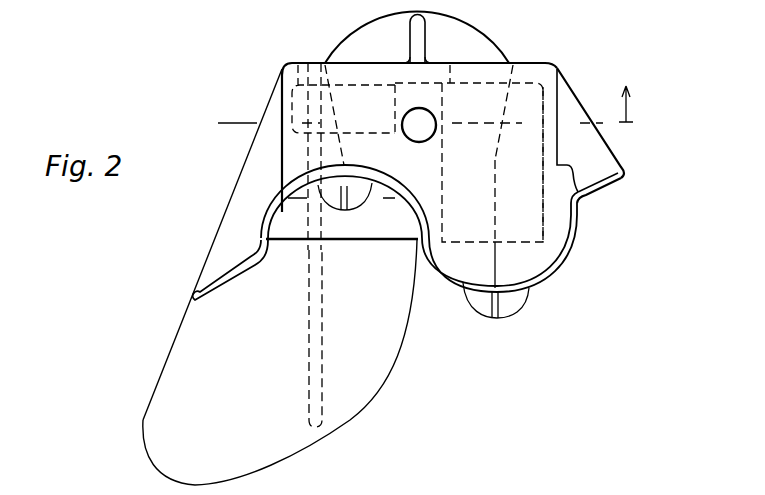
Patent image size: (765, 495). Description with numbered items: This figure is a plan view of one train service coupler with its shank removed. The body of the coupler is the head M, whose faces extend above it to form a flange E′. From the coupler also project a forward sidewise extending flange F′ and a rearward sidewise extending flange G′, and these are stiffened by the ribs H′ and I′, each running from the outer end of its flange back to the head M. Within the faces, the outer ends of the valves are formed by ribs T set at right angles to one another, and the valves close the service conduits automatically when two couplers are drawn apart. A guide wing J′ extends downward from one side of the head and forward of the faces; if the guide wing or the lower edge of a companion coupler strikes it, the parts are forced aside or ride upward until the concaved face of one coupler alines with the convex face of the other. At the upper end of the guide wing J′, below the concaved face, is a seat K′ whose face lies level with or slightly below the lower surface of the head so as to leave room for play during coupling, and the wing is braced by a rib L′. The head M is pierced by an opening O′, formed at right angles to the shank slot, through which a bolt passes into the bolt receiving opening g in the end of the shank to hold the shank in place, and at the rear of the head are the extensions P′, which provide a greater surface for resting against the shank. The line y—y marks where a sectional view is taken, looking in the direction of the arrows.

The extensions P′ is at (487, 37).
The rib I′ is at (564, 97).
The rearward sidewise extending flange G′ is at (608, 181).
The head M is at (558, 224).
The flange E′ is at (426, 243).
The bolt receiving opening g is at (380, 193).
The ribs T is at (342, 206).
The forward sidewise extending flange F′ is at (206, 287).
The opening O′ is at (436, 120).
The rib H′ is at (232, 192).
The guide wing J′ is at (350, 407).
The seat K′ is at (350, 262).
The rib L′ is at (326, 345).
The section line y— y is at (429, 111).